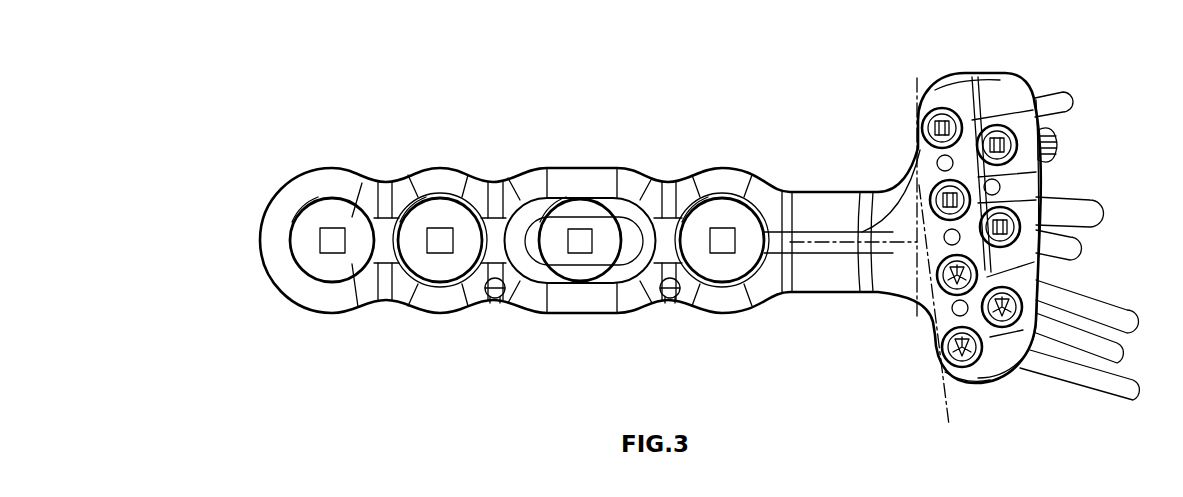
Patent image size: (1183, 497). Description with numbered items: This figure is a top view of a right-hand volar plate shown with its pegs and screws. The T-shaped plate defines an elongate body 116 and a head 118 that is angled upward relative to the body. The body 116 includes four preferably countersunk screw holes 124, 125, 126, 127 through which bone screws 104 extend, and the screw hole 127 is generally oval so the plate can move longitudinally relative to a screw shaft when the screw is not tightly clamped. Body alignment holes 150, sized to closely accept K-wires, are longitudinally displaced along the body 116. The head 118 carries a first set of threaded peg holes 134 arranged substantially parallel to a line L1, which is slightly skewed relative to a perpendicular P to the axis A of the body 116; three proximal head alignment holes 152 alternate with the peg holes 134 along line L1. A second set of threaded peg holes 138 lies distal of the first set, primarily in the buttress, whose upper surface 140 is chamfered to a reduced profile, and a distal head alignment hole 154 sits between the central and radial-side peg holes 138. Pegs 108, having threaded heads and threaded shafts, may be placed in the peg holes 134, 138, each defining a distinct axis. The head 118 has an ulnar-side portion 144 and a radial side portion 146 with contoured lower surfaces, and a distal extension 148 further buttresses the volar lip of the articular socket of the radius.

The bone screws 104 is at (420, 217).
The pegs 108 is at (1060, 145).
The elongate body 116 is at (545, 170).
The head 118 is at (957, 87).
The screw hole 124 is at (303, 205).
The screw hole 125 is at (433, 195).
The screw hole 126 is at (712, 175).
The oval screw hole 127 is at (627, 257).
The first set of threaded peg holes 134 is at (923, 118).
The second set of threaded peg holes 138 is at (1003, 122).
The upper surface of the buttress 140 is at (1027, 263).
The ulnar-side portion 144 is at (977, 370).
The radial side portion 146 is at (972, 85).
The distal extension 148 is at (1066, 102).
The body alignment holes 150 is at (495, 300).
The proximal head alignment holes 152 is at (938, 158).
The distal head alignment hole 154 is at (1001, 187).
The axis of the body portion A is at (813, 243).
The perpendicular to the axis P is at (917, 195).
The line L1 is at (945, 412).